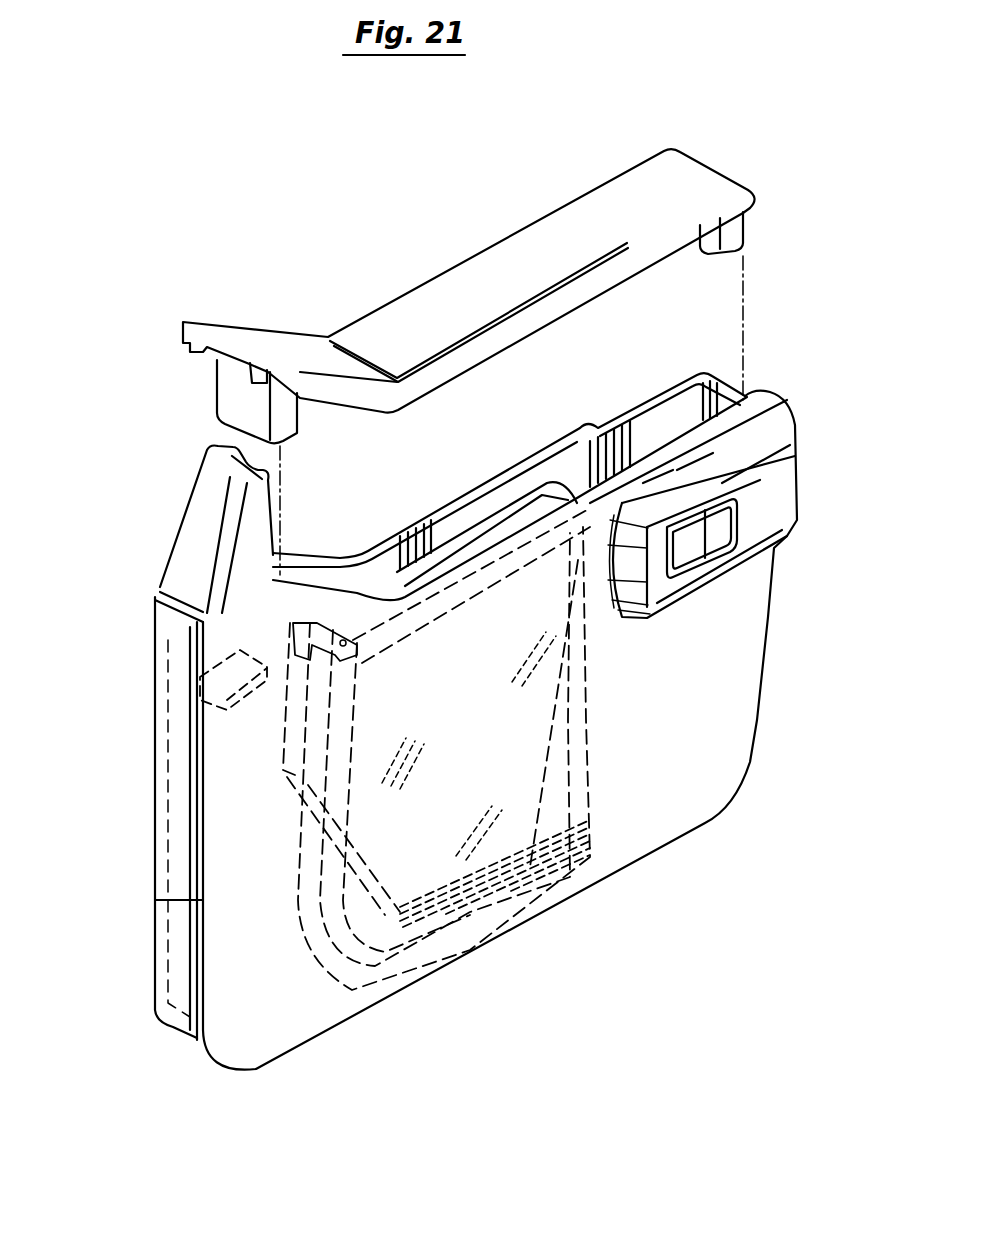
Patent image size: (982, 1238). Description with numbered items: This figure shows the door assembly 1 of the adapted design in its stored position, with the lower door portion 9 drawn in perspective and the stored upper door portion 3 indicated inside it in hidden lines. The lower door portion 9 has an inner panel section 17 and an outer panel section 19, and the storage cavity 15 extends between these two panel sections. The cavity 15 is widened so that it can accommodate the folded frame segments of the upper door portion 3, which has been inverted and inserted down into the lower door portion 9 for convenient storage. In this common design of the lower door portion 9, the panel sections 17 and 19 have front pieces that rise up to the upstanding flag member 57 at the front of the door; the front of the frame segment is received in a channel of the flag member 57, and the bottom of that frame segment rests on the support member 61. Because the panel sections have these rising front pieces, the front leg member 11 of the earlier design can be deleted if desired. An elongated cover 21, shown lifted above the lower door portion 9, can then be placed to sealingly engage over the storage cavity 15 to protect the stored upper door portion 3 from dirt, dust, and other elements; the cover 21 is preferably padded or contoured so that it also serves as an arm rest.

The door assembly 1 is at (313, 173).
The cover 21 is at (508, 273).
The storage cavity 15 is at (655, 440).
The leg member 11 is at (520, 520).
The flag member 57 is at (193, 500).
The support member 61 is at (187, 680).
The inner panel section 17 is at (155, 742).
The outer panel section 19 is at (193, 900).
The upper door portion 3 is at (303, 960).
The lower door portion 9 is at (768, 617).